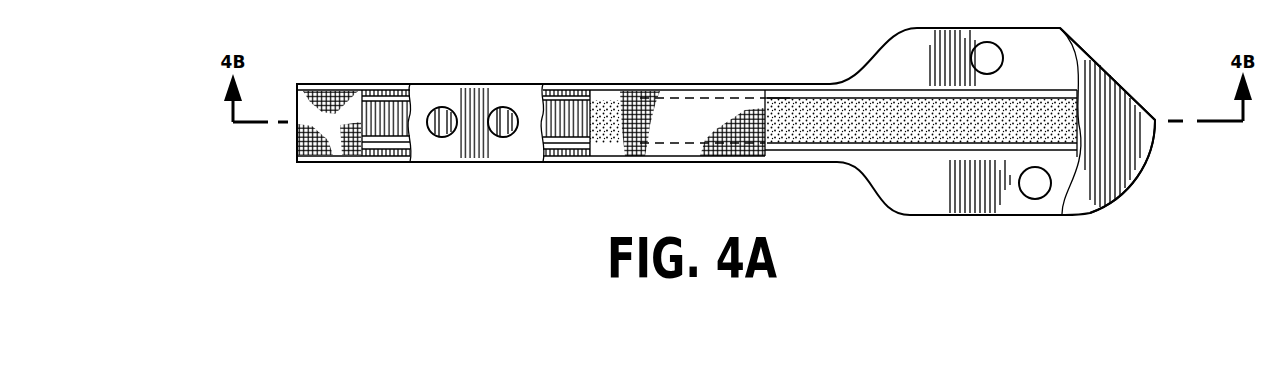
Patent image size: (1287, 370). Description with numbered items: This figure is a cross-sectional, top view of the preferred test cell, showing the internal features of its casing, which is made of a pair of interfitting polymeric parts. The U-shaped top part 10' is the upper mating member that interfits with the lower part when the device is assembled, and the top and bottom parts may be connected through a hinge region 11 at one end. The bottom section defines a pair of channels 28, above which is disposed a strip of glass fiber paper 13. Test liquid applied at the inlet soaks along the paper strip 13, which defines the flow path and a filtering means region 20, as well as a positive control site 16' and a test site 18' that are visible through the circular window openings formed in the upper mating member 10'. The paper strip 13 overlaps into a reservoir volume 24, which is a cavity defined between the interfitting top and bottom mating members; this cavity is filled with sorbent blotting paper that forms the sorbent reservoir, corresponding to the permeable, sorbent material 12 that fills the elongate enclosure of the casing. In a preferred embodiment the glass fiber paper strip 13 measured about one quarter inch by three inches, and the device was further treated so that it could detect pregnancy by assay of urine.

The U-shaped top part 10' is at (726, 121).
The hinge region 11 is at (1116, 89).
The sorbent material 12 is at (870, 131).
The glass fiber paper strip 13 is at (570, 126).
The positive control site 16' is at (433, 93).
The test site 18' is at (495, 93).
The filtering means region 20 is at (419, 176).
The reservoir volume 24 is at (787, 97).
The channels 28 is at (381, 100).